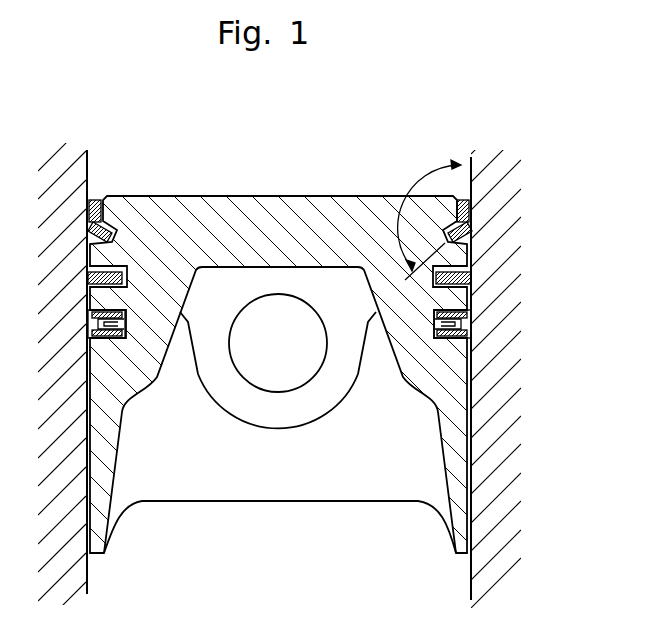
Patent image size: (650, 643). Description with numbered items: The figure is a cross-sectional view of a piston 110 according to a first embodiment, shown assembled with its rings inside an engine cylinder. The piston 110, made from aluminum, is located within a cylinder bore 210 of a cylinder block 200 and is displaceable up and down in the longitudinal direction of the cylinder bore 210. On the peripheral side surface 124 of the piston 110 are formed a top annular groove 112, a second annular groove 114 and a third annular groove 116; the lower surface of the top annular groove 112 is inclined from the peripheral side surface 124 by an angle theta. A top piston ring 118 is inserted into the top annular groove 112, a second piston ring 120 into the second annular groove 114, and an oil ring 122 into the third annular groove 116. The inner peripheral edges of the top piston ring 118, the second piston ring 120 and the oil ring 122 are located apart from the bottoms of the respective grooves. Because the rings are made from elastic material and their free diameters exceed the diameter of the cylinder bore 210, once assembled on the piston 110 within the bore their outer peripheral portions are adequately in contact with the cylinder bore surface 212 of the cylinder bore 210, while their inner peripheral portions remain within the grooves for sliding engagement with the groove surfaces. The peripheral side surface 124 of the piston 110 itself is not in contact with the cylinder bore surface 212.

The piston 110 is at (265, 196).
The top annular groove 112 is at (472, 282).
The second annular groove 114 is at (473, 309).
The third annular groove 116 is at (477, 332).
The top piston ring 118 is at (469, 206).
The second piston ring 120 is at (475, 322).
The oil ring 122 is at (474, 340).
The peripheral side surface 124 is at (462, 245).
The cylinder block 200 is at (493, 562).
The cylinder bore 210 is at (245, 548).
The cylinder bore surface 212 is at (88, 572).